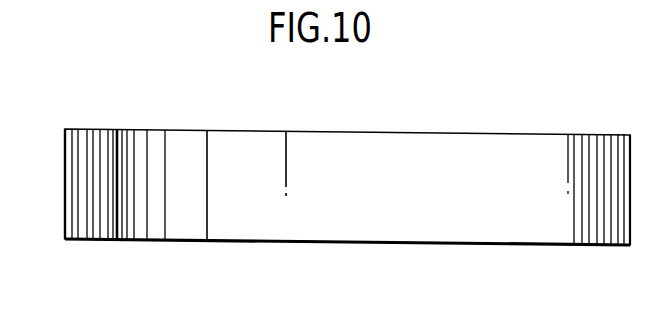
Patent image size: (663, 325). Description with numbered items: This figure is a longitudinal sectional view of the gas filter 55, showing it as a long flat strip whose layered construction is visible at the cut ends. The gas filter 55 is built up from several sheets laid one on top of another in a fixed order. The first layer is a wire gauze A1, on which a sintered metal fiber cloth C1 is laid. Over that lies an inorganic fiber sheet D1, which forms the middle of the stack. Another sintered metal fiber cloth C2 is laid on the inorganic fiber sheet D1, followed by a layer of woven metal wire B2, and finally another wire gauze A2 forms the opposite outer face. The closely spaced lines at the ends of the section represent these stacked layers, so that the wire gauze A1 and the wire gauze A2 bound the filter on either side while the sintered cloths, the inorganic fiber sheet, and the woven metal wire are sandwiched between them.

The gas filter 55 is at (507, 134).
The wire gauze A2 is at (65, 143).
The woven metal wire B2 is at (77, 128).
The sintered metal fiber cloth C2 is at (83, 128).
The inorganic fiber sheet D1 is at (88, 234).
The wire gauze A1 is at (105, 232).
The sintered metal fiber cloth C1 is at (97, 200).